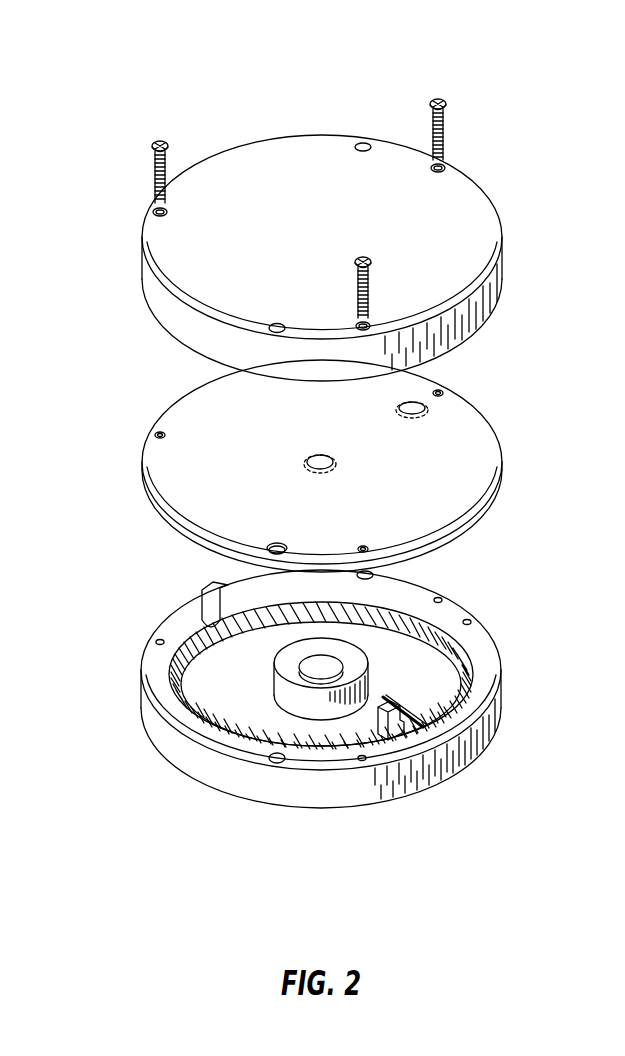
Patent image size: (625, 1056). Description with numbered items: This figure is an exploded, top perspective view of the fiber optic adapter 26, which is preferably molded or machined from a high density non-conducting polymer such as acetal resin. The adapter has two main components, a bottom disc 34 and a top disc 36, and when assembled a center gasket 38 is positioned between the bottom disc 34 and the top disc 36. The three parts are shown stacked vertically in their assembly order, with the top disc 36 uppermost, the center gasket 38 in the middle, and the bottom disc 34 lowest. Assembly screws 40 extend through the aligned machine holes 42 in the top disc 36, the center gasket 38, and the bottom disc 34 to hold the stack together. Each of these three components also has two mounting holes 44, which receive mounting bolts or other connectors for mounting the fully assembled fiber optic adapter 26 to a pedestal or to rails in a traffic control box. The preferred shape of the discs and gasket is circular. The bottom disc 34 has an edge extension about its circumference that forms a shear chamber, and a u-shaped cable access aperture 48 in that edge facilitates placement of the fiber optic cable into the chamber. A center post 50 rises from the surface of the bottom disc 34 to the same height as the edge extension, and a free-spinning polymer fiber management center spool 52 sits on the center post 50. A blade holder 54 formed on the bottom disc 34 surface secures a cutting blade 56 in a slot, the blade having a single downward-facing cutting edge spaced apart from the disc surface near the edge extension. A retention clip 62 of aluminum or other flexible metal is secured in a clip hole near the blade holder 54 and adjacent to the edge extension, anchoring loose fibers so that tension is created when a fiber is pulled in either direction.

The fiber optic adapter 26 is at (102, 54).
The bottom disc 34 is at (467, 620).
The top disc 36 is at (467, 207).
The center gasket 38 is at (475, 437).
The assembly screws 40 is at (158, 140).
The machine holes 42 is at (445, 167).
The mounting holes 44 is at (362, 143).
The u-shaped cable access aperture 48 is at (207, 603).
The center post 50 is at (323, 670).
The fiber management center spool 52 is at (282, 698).
The blade holder 54 is at (384, 717).
The cutting blade 56 is at (418, 710).
The retention clip 62 is at (340, 735).